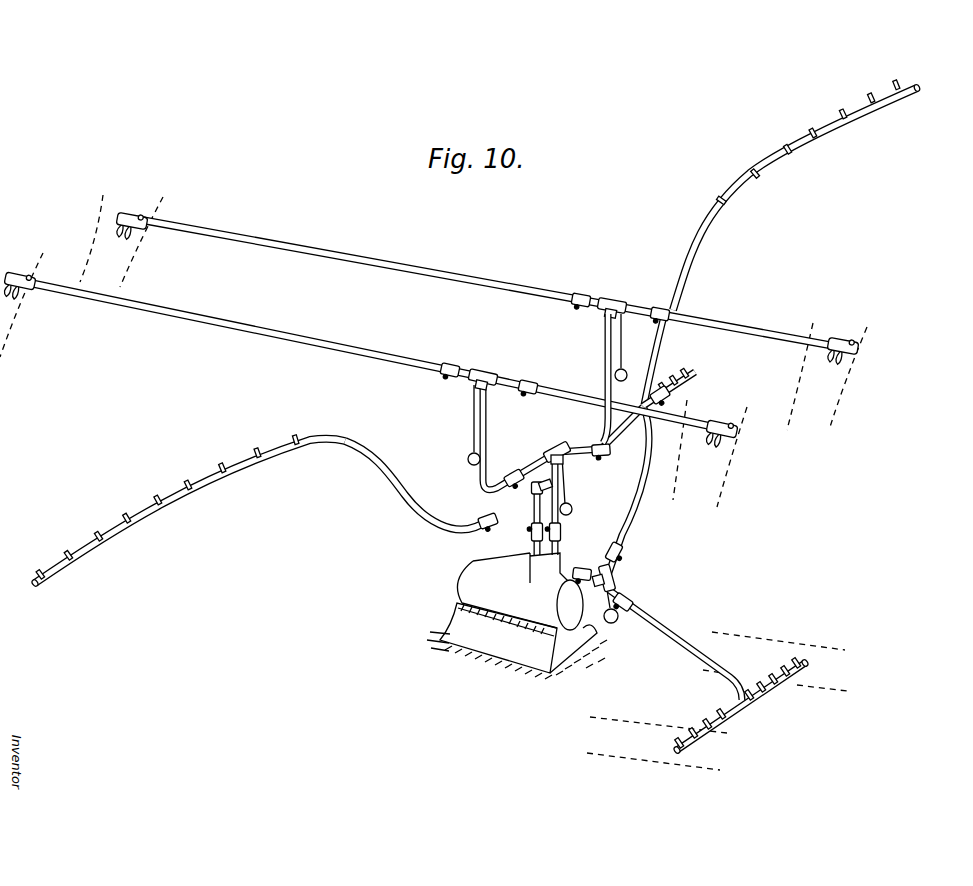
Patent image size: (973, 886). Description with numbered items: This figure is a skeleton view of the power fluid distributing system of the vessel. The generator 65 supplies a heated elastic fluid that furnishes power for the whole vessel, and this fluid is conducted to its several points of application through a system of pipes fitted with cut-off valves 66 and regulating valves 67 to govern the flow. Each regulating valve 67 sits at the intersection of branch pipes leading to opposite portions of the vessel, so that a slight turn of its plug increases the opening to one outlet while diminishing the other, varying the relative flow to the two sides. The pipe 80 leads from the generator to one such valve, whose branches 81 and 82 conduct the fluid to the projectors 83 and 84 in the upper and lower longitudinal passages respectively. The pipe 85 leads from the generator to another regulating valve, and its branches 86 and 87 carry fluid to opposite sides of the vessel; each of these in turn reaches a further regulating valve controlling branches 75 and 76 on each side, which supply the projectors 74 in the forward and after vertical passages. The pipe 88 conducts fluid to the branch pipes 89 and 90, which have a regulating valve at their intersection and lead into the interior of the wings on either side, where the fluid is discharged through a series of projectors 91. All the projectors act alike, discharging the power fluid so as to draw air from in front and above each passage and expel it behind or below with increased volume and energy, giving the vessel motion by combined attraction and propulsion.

The generator 65 is at (517, 616).
The cut-off valve 66 is at (578, 297).
The regulating valve 67 is at (616, 299).
The projector 74 is at (138, 212).
The branch pipe 75 is at (352, 259).
The branch pipe 76 is at (744, 330).
The pipe 80 is at (599, 604).
The branch pipe 81 is at (630, 522).
The branch pipe 82 is at (667, 631).
The projector 83 is at (680, 398).
The projector 84 is at (741, 706).
The pipe 85 is at (559, 497).
The branch pipe 86 is at (543, 461).
The branch pipe 87 is at (600, 429).
The pipe 88 is at (534, 517).
The branch pipe 89 is at (447, 537).
The branch pipe 90 is at (655, 367).
The projector 91 is at (70, 550).